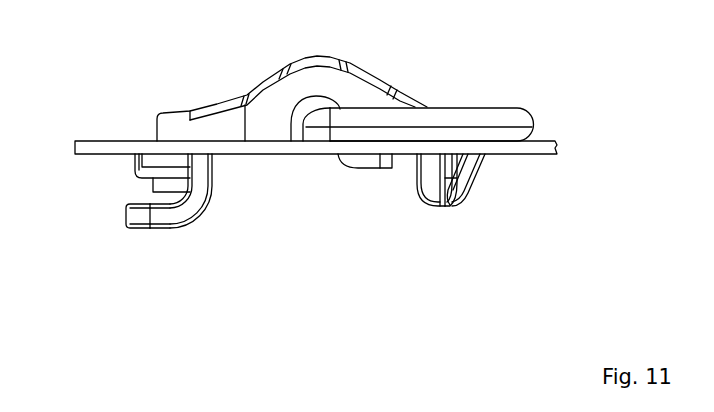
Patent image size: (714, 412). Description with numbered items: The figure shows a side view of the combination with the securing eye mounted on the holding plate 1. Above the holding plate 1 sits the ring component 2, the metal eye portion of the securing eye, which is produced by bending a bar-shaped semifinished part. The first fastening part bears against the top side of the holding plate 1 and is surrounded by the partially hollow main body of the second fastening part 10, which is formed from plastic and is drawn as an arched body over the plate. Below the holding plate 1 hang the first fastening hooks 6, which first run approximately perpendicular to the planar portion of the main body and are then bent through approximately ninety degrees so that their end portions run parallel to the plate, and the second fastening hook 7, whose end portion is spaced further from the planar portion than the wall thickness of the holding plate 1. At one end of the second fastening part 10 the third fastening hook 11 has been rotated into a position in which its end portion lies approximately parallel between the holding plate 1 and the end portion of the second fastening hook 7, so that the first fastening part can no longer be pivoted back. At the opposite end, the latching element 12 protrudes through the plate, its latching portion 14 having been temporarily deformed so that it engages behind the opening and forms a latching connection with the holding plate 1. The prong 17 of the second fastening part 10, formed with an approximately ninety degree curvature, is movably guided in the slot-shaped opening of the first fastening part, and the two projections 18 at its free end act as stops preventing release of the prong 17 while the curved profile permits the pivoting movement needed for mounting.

The holding plate 1 is at (82, 140).
The ring component 2 is at (463, 116).
The first fastening hooks 6 is at (368, 176).
The second fastening hook 7 is at (200, 188).
The second fastening part 10 is at (234, 120).
The third fastening hook 11 is at (148, 173).
The latching element 12 is at (437, 214).
The latching portion 14 is at (482, 203).
The prong 17 is at (173, 226).
The projections 18 is at (137, 226).